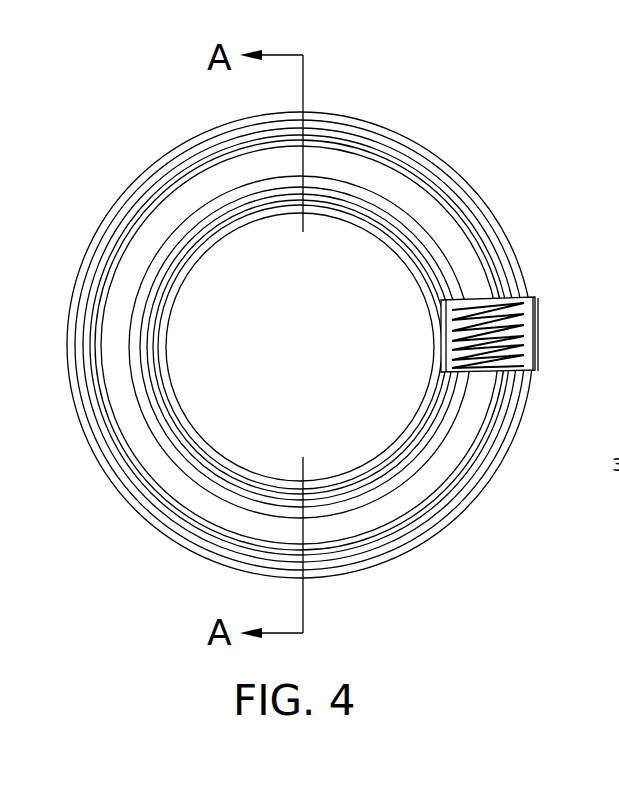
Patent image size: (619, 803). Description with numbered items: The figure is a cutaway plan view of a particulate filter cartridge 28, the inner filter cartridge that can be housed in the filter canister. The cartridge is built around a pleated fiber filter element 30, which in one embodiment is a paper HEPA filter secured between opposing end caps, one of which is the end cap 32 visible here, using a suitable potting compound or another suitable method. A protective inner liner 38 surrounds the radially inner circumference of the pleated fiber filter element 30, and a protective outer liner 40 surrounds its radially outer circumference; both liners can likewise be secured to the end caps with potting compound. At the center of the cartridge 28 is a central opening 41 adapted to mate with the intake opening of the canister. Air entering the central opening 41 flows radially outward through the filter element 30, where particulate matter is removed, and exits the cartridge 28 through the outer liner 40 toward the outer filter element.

The particulate filter cartridge 28 is at (176, 112).
The end cap 32 is at (410, 200).
The pleated fiber filter element 30 is at (533, 302).
The inner liner 38 is at (441, 342).
The outer liner 40 is at (538, 346).
The central opening 41 is at (376, 422).